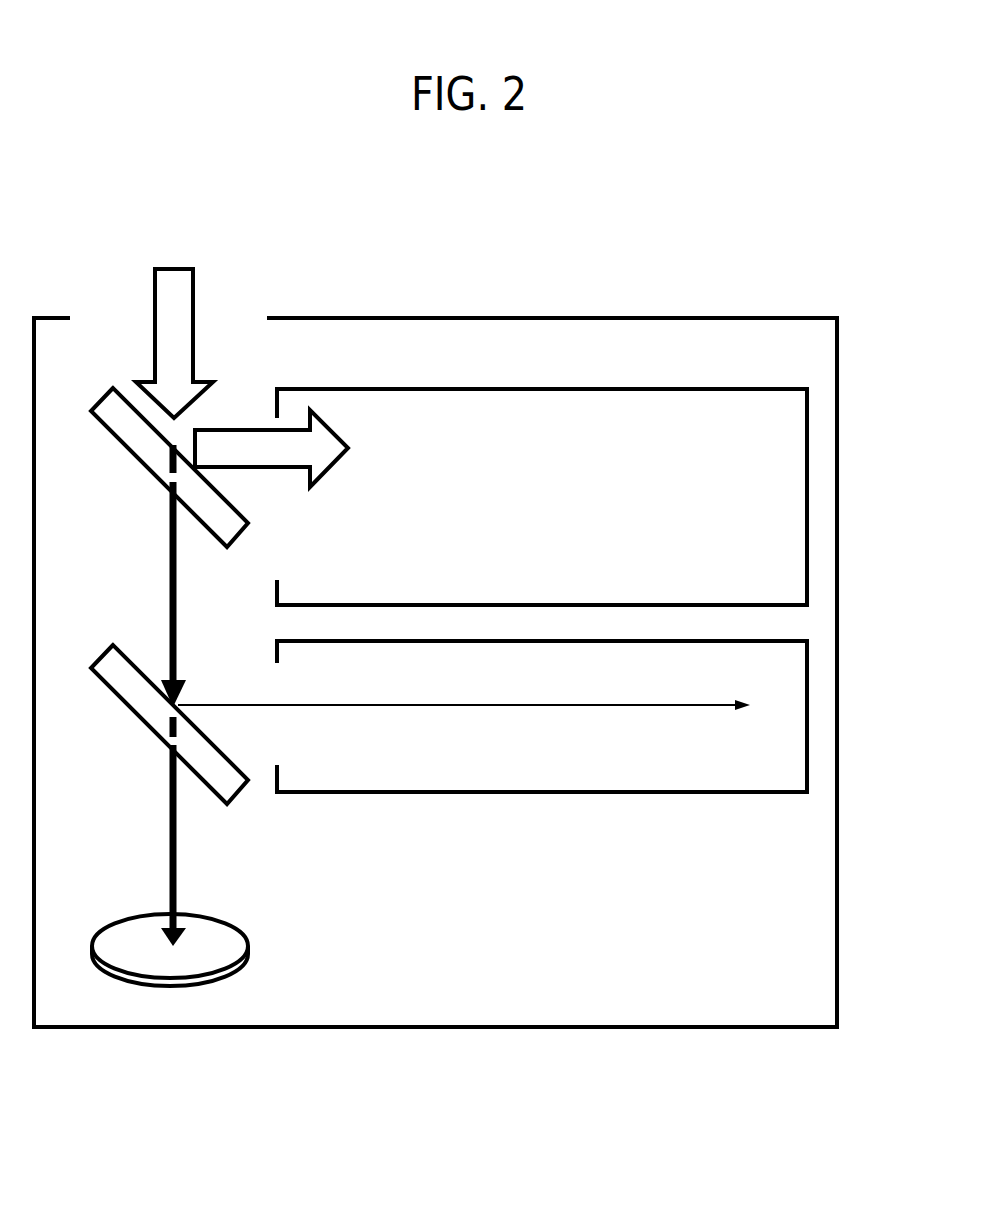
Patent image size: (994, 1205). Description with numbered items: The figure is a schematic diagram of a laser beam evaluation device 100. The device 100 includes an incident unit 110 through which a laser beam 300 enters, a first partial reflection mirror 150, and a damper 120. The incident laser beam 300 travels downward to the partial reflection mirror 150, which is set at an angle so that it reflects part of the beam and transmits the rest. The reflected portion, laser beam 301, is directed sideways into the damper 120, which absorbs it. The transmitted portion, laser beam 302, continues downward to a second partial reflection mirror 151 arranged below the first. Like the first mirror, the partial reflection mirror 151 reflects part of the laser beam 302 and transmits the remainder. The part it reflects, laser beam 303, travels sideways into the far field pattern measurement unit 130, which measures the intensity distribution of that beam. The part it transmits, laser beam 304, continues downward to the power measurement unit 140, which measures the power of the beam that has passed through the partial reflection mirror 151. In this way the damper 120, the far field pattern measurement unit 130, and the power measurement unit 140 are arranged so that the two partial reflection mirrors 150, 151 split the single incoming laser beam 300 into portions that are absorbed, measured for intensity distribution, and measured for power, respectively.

The laser beam evaluation device 100 is at (767, 290).
The incident unit 110 is at (225, 328).
The damper 120 is at (810, 505).
The far field pattern (FFP) measurement unit 130 is at (810, 725).
The power measurement unit 140 is at (225, 941).
The partial reflection mirror 150 is at (137, 458).
The partial reflection mirror 151 is at (137, 715).
The laser beam 300 is at (174, 326).
The laser beam 301 is at (301, 448).
The laser beam 302 is at (168, 553).
The laser beam 303 is at (632, 703).
The laser beam 304 is at (170, 810).